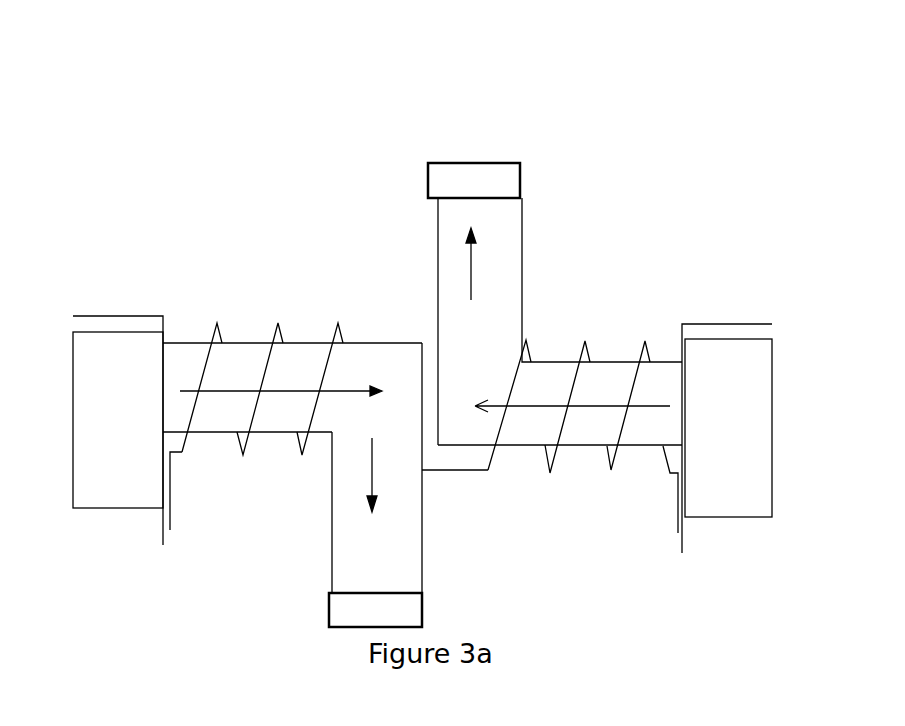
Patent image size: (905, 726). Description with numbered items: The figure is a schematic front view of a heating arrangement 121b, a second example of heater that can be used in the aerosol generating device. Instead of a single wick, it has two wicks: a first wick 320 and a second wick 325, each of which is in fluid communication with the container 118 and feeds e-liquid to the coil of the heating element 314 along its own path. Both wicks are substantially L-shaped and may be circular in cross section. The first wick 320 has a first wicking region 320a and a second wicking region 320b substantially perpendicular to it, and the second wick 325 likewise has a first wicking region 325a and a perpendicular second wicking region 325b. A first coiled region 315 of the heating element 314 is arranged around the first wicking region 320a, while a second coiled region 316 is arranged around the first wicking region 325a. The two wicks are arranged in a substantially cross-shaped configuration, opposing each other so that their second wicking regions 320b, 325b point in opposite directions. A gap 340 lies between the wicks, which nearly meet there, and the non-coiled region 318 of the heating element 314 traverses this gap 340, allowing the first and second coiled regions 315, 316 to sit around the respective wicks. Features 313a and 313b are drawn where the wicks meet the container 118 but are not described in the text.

The container 118 is at (128, 404).
The heating arrangement 121b is at (648, 114).
The first connection step 313a is at (170, 505).
The second connection step 313b is at (678, 513).
The heating element 314 is at (337, 82).
The first coiled region 315 is at (282, 330).
The second coiled region 316 is at (582, 353).
The non-coiled region 318 is at (453, 470).
The first wick 320 is at (248, 343).
The first wicking region 320a is at (278, 432).
The second wicking region 320b is at (332, 538).
The second wick 325 is at (605, 361).
The first wicking region 325a is at (528, 446).
The second wicking region 325b is at (462, 222).
The gap 340 is at (413, 376).